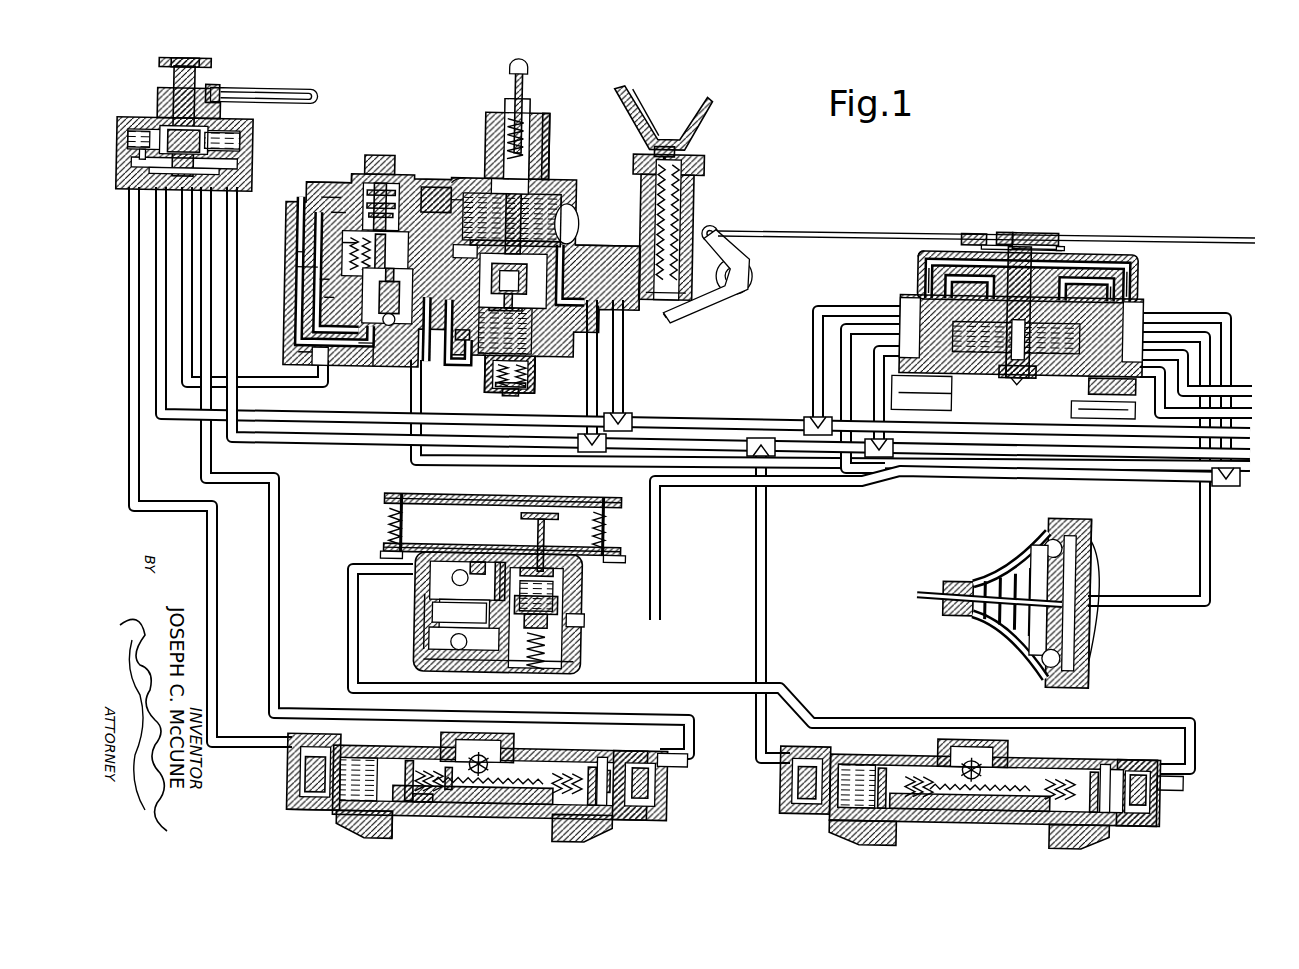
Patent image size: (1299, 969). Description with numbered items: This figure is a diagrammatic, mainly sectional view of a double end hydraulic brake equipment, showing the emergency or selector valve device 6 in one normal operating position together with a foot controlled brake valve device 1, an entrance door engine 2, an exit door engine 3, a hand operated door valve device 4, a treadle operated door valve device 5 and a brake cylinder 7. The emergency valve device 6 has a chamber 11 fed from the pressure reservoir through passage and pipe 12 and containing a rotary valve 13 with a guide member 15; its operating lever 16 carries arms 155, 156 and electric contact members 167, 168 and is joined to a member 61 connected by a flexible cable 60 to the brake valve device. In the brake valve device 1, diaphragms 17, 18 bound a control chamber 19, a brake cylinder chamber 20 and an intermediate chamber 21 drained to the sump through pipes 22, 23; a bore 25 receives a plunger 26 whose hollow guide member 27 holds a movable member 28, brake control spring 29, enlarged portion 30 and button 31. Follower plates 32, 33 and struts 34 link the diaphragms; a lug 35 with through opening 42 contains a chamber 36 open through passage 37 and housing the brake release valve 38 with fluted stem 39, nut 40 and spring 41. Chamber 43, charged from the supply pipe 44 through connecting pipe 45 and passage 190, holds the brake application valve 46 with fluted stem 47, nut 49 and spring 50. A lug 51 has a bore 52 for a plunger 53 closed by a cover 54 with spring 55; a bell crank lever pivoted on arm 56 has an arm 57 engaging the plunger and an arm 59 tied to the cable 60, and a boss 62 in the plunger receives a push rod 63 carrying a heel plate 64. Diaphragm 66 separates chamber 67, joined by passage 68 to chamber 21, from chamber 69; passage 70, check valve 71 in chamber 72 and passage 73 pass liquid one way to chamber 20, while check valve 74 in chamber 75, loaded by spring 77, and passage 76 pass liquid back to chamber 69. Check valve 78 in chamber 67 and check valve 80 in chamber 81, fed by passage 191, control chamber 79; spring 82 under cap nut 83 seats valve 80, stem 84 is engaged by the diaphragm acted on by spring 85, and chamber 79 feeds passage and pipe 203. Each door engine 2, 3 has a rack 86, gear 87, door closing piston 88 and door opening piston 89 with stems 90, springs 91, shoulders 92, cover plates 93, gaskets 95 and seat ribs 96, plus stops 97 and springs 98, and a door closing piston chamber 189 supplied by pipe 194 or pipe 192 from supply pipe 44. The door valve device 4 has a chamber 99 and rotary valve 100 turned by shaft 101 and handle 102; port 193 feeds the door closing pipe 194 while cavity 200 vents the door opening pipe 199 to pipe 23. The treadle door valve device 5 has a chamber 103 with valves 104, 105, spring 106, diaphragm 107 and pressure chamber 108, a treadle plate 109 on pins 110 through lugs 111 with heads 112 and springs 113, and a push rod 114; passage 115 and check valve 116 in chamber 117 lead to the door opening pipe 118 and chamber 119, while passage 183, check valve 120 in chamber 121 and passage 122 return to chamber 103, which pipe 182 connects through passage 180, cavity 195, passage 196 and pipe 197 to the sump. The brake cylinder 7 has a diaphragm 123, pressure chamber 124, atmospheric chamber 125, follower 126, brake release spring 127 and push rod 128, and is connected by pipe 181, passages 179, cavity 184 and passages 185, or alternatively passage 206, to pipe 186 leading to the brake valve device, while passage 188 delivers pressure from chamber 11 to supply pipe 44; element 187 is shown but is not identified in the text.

The feed valve device 1 is at (468, 160).
The brake cylinder device 2 is at (549, 824).
The brake cylinder device 3 is at (1014, 829).
The brake valve device 4 is at (133, 118).
The relay valve device 5 is at (505, 538).
The control valve device 6 is at (1010, 380).
The diaphragm valve device 7 is at (975, 578).
The stem 11 is at (1028, 365).
The body portion 12 is at (1112, 383).
The stem portion 13 is at (1032, 340).
The valve 15 is at (1020, 382).
The lever pivot 16 is at (1015, 236).
The chamber wall 17 is at (565, 215).
The chamber 18 is at (545, 320).
The casing shoulder 19 is at (548, 198).
The chamber 20 is at (538, 348).
The passage 21 is at (578, 222).
The pipe 22 is at (628, 386).
The pipe 23 is at (162, 248).
The follower 25 is at (530, 160).
The spring casing 26 is at (548, 150).
The casing wall 27 is at (548, 125).
The adjusting stem 28 is at (510, 78).
The regulating spring 29 is at (530, 118).
The cylinder 30 is at (525, 98).
The cap 31 is at (522, 68).
The casing section 32 is at (560, 190).
The passage 33 is at (460, 352).
The valve seat 34 is at (610, 225).
The valve chamber 35 is at (575, 262).
The casing portion 36 is at (607, 277).
The casing 37 is at (478, 172).
The valve 38 is at (522, 262).
The valve stem 39 is at (500, 262).
The diaphragm follower 40 is at (509, 187).
The diaphragm chamber 41 is at (522, 240).
The diaphragm 42 is at (498, 240).
The spring 43 is at (500, 388).
The pipe 44 is at (217, 214).
The pipe connection 45 is at (632, 420).
The spring casing 46 is at (492, 362).
The passage 47 is at (540, 385).
The spring seat 49 is at (525, 388).
The cap nut 50 is at (511, 394).
The passage 51 is at (630, 330).
The cylinder 52 is at (690, 195).
The passage 53 is at (655, 300).
The cylinder head 54 is at (705, 163).
The spring 55 is at (682, 215).
The lever pivot 56 is at (752, 265).
The lever 57 is at (735, 300).
The pin 59 is at (720, 237).
The rod 60 is at (838, 233).
The lever 61 is at (985, 234).
The lever arm 62 is at (690, 318).
The piston stem 63 is at (676, 152).
The funnel 64 is at (650, 120).
The passage 66 is at (300, 258).
The casing 67 is at (340, 215).
The spring 68 is at (400, 240).
The passage 69 is at (330, 282).
The valve 70 is at (375, 300).
The passage 71 is at (330, 358).
The pipe connection 72 is at (330, 372).
The passage 73 is at (370, 360).
The ball valve 74 is at (380, 322).
The valve chamber 75 is at (365, 310).
The passage 76 is at (300, 272).
The passage 77 is at (330, 300).
The casing 78 is at (330, 200).
The casing cover 79 is at (345, 188).
The valve disc 80 is at (395, 200).
The pilot valve 81 is at (395, 190).
The valve seat 82 is at (385, 180).
The cap 83 is at (372, 157).
The passage 84 is at (350, 245).
The valve disc 85 is at (398, 212).
The rack 86 is at (520, 775).
The pinion 87 is at (478, 752).
The cylinder body 88 is at (365, 835).
The piston head 89 is at (597, 768).
The piston packing 90 is at (430, 803).
The piston rod 91 is at (470, 805).
The piston 92 is at (445, 770).
The cylinder wall 93 is at (590, 770).
The passage 95 is at (393, 825).
The spring 96 is at (425, 772).
The cylinder head 97 is at (300, 812).
The cylinder cap 98 is at (298, 790).
The valve chamber 99 is at (128, 138).
The port 100 is at (142, 153).
The valve stem 101 is at (168, 84).
The handle 102 is at (277, 84).
The piston 103 is at (565, 598).
The port 104 is at (600, 612).
The valve 105 is at (560, 625).
The spring 106 is at (555, 650).
The follower 107 is at (550, 560).
The chamber 108 is at (565, 578).
The top plate 109 is at (410, 500).
The bolt 110 is at (606, 500).
The plate 111 is at (385, 548).
The clip 112 is at (385, 556).
The spring 113 is at (385, 522).
The stem 114 is at (542, 510).
The valve 115 is at (495, 565).
The valve seat 116 is at (475, 565).
The ball 117 is at (455, 568).
The pipe 118 is at (366, 584).
The pipe 119 is at (640, 768).
The ball 120 is at (450, 642).
The passage 121 is at (430, 660).
The passage 122 is at (520, 665).
The diaphragm clamp 123 is at (1045, 535).
The casing 124 is at (1095, 560).
The diaphragm 125 is at (1035, 560).
The clamp ring 126 is at (1050, 628).
The hub 127 is at (965, 580).
The rod 128 is at (930, 602).
The lever 155 is at (985, 248).
The lever 156 is at (1060, 248).
The pivot 167 is at (1045, 232).
The pivot 168 is at (1040, 238).
The passage 179 is at (1130, 272).
The passage 180 is at (1112, 292).
The pipe 181 is at (1200, 538).
The pipe 182 is at (660, 545).
The chamber 183 is at (440, 612).
The casing lug 184 is at (1103, 408).
The passage 185 is at (930, 280).
The pipe 186 is at (410, 398).
The valve stem 187 is at (1005, 345).
The casing lug 188 is at (921, 390).
The fluid chamber 189 is at (355, 805).
The pipe 190 is at (612, 372).
The passage 191 is at (440, 352).
The pipe 192 is at (768, 596).
The port 193 is at (155, 175).
The pipe 194 is at (135, 292).
The valve 195 is at (1010, 375).
The passage 196 is at (920, 258).
The pipe 197 is at (812, 322).
The pipe 199 is at (217, 207).
The valve chamber 200 is at (238, 143).
The pipe 203 is at (302, 384).
The pipe 206 is at (1150, 302).